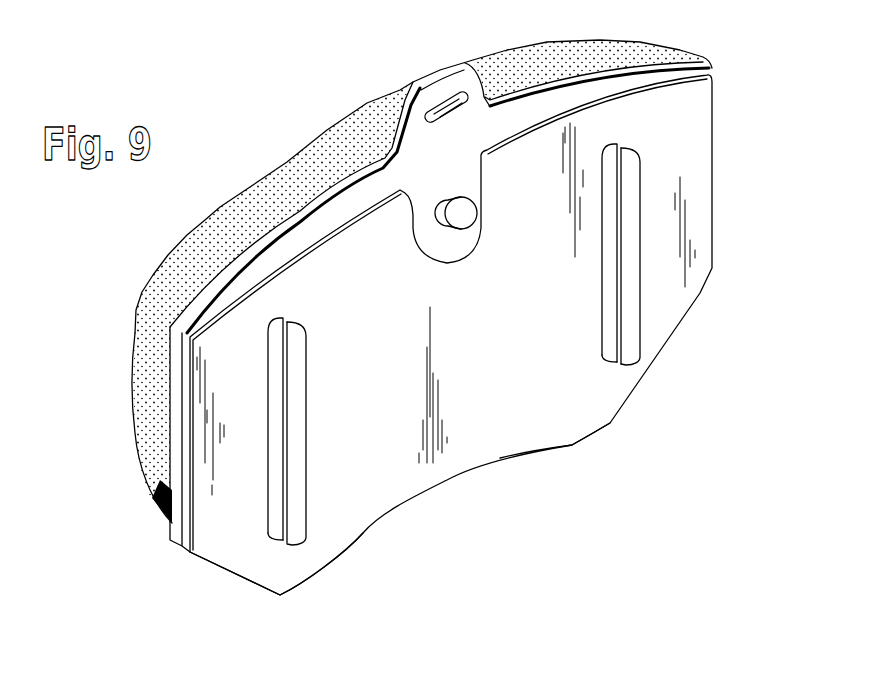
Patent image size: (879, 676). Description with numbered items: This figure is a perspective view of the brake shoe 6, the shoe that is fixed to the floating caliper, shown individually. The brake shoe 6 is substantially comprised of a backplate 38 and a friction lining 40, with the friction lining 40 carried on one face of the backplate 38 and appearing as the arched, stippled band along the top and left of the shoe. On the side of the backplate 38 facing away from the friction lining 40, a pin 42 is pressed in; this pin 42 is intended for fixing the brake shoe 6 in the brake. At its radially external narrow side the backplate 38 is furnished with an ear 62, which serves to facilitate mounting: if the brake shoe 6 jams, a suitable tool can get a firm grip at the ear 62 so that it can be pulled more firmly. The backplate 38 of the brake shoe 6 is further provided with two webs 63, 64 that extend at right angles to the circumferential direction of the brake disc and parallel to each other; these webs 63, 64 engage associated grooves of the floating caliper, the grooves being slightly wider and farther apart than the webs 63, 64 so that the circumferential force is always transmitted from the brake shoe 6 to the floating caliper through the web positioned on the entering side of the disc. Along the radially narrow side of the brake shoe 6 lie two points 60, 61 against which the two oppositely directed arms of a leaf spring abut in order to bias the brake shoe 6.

The brake shoe 6 is at (731, 160).
The backplate 38 is at (310, 232).
The friction lining 40 is at (333, 147).
The pin 42 is at (462, 233).
The point of the radially narrow side 60 is at (307, 583).
The point of the radially narrow side 61 is at (593, 437).
The ear 62 is at (480, 97).
The web 63 is at (294, 453).
The web 64 is at (632, 287).